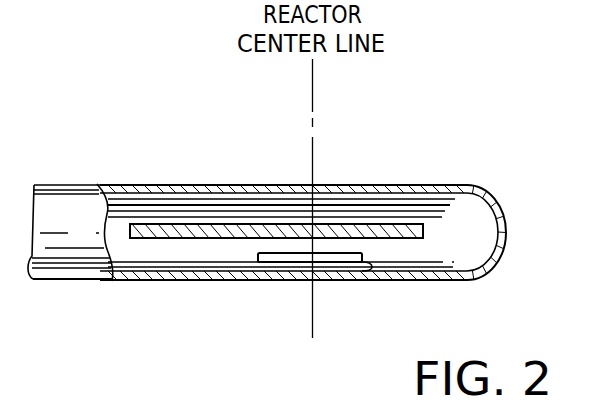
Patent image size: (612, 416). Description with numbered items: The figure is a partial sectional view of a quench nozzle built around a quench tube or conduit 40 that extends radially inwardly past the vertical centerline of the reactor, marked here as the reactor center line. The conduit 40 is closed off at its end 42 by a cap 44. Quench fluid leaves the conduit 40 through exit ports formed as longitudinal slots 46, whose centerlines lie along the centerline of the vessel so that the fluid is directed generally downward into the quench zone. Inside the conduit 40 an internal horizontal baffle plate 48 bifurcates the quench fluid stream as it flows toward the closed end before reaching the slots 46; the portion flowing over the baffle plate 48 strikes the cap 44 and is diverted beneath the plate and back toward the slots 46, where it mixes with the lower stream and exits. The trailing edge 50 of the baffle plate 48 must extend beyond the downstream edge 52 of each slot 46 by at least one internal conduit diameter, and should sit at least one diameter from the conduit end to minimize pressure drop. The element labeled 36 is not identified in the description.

The reactor tube 36 is at (67, 183).
The quench tube or conduit 40 is at (154, 185).
The end 42 is at (452, 170).
The cap 44 is at (503, 219).
The longitudinal slots 46 is at (333, 262).
The internal horizontal baffle plate 48 is at (348, 223).
The trailing edge 50 is at (438, 282).
The downstream edge 52 is at (365, 262).